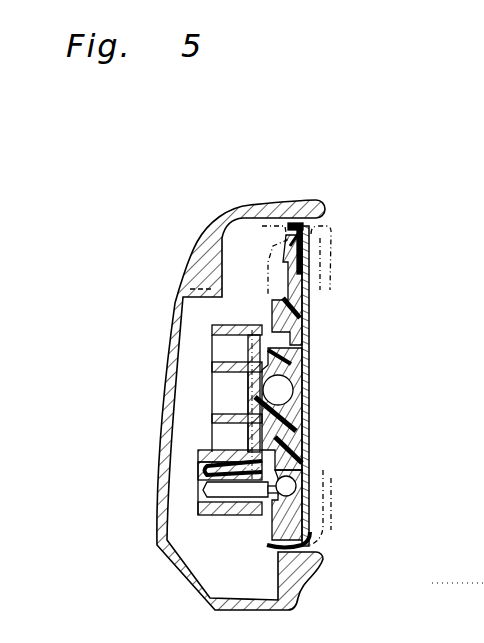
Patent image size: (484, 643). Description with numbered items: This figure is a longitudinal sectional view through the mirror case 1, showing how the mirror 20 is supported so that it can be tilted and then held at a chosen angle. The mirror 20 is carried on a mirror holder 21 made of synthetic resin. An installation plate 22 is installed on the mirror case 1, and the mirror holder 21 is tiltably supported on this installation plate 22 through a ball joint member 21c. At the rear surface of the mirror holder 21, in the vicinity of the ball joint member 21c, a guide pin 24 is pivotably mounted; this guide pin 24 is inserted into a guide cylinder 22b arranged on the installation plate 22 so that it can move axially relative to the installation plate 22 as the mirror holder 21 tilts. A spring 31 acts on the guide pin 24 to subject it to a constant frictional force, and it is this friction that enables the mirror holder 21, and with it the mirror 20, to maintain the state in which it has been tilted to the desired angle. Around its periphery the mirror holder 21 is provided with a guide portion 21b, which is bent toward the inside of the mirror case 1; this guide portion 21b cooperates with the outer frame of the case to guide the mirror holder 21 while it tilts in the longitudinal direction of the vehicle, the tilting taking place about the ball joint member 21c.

The mirror case 1 is at (242, 194).
The mirror 20 is at (309, 319).
The mirror holder 21 is at (268, 303).
The guide portion 21b is at (299, 222).
The ball joint member 21c is at (248, 392).
The installation plate 22 is at (246, 360).
The guide cylinder 22b is at (205, 487).
The guide pin 24 is at (258, 503).
The spring 31 is at (202, 463).